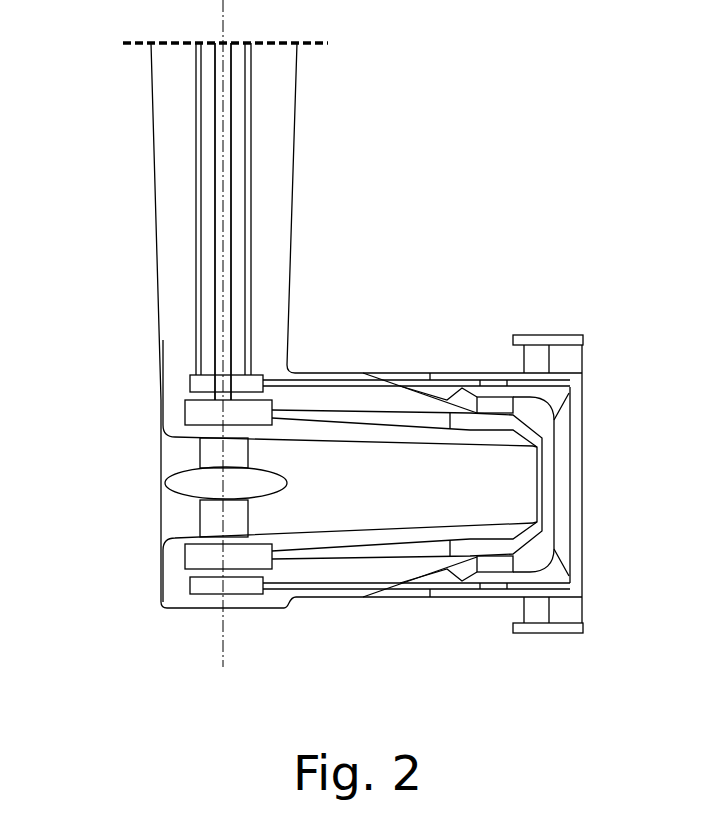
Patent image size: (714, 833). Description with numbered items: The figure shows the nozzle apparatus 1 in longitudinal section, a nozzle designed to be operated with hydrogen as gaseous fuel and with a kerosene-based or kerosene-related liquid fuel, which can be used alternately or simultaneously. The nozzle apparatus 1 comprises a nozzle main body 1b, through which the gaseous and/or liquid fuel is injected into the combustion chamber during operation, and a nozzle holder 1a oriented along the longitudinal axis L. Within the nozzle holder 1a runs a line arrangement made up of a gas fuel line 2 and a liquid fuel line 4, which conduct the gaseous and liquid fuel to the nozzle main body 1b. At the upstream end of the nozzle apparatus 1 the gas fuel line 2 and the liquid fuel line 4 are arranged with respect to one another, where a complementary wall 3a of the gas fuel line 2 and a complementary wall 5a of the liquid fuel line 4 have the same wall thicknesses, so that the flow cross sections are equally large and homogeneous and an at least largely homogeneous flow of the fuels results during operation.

The nozzle apparatus 1 is at (160, 78).
The nozzle holder 1a is at (168, 313).
The nozzle main body 1b is at (337, 598).
The gas fuel line 2 is at (238, 132).
The complementary wall of the gas fuel line 3a is at (247, 65).
The liquid fuel line 4 is at (225, 228).
The complementary wall of the liquid fuel line 5a is at (232, 190).
The longitudinal axis L is at (222, 623).